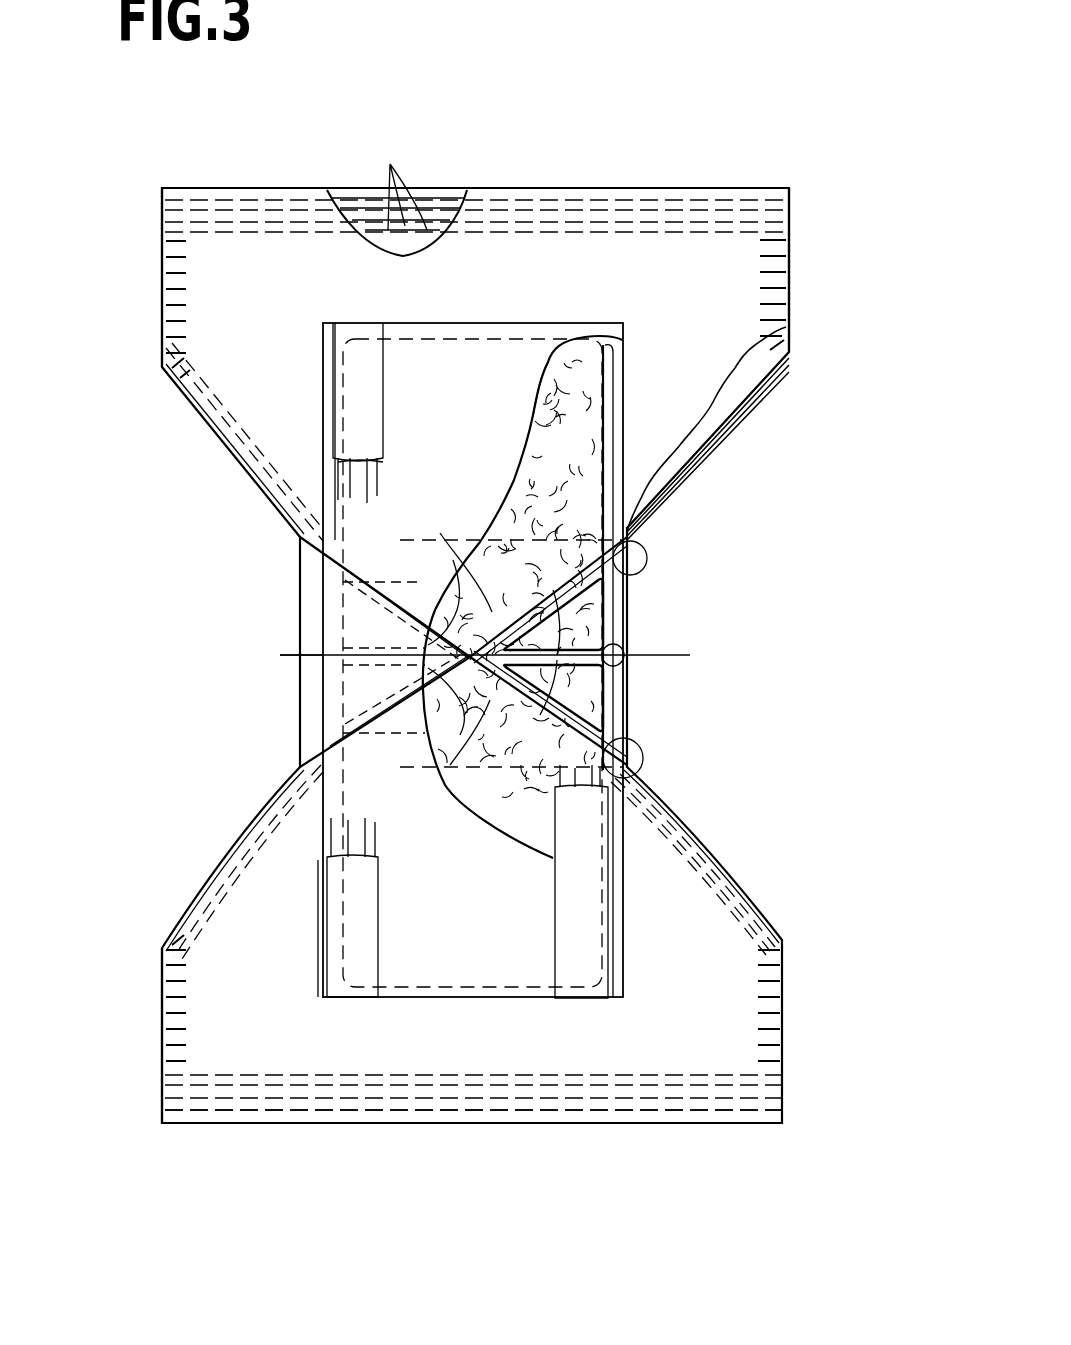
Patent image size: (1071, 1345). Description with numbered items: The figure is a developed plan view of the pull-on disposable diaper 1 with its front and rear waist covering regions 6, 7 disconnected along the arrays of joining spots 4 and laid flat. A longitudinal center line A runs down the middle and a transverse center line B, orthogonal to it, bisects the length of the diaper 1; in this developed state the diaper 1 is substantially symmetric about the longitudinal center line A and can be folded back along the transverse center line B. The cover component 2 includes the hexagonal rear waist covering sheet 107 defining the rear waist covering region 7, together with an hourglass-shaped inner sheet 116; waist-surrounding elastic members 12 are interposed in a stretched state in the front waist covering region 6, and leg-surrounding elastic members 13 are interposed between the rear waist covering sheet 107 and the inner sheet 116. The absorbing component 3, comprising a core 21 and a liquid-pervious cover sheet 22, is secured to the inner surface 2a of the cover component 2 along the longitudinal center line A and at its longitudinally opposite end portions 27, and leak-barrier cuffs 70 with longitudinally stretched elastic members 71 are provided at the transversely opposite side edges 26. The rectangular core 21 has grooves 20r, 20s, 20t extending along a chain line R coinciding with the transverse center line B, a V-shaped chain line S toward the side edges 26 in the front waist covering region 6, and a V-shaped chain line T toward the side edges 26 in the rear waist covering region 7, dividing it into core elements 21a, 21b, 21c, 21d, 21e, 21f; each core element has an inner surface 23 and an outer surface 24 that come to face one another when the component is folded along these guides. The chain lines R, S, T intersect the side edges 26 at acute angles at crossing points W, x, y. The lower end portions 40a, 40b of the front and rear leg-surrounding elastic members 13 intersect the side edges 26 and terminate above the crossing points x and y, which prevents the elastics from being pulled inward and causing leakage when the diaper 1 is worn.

The diaper 1 is at (648, 155).
The cover component 2 is at (246, 178).
The inner surface of the cover component 2a is at (237, 1055).
The absorbing component 3 is at (395, 315).
The joining spots 4 is at (762, 263).
The front waist covering region 6 is at (200, 1022).
The rear waist covering region 7 is at (205, 297).
The waist-surrounding elastic members 12 is at (397, 191).
The leg-surrounding elastic members 13 is at (745, 405).
The groove 20r is at (440, 652).
The groove 20s is at (459, 716).
The groove 20t is at (452, 547).
The core 21 is at (615, 402).
The core element 21a is at (473, 815).
The core element 21b is at (583, 452).
The core element 21c is at (511, 751).
The core element 21d is at (418, 686).
The core element 21e is at (572, 560).
The core element 21f is at (384, 592).
The cover sheet 22 is at (566, 378).
The inner surface of the core element 23 is at (620, 690).
The outer surface of the core element 24 is at (625, 720).
The side edges 26 is at (615, 366).
The longitudinally opposite end portions 27 is at (465, 355).
The lower end portions of the front side leg-surrounding elastic members 40a is at (270, 792).
The lower end portions of the rear side leg-surrounding elastic members 40b is at (283, 518).
The leak-barrier cuffs 70 is at (360, 375).
The elastic members 71 is at (378, 478).
The rear waist covering sheet 107 is at (710, 425).
The inner sheet 116 is at (613, 1062).
The longitudinal center line A is at (470, 1262).
The transverse center line B is at (890, 655).
The chain line R is at (282, 664).
The chain line S is at (663, 782).
The chain line T is at (645, 532).
The crossing point W is at (497, 661).
The crossing point x is at (645, 757).
The crossing point y is at (645, 553).